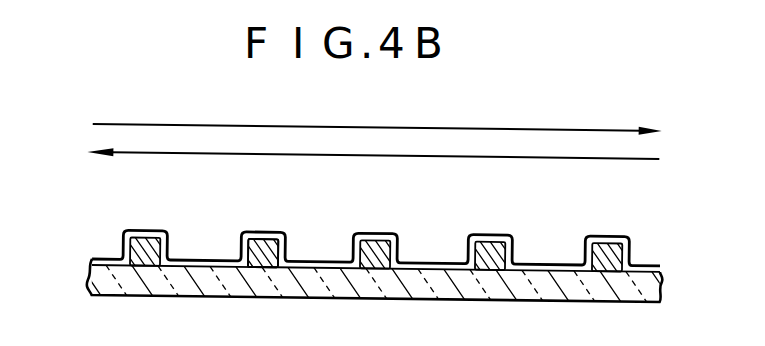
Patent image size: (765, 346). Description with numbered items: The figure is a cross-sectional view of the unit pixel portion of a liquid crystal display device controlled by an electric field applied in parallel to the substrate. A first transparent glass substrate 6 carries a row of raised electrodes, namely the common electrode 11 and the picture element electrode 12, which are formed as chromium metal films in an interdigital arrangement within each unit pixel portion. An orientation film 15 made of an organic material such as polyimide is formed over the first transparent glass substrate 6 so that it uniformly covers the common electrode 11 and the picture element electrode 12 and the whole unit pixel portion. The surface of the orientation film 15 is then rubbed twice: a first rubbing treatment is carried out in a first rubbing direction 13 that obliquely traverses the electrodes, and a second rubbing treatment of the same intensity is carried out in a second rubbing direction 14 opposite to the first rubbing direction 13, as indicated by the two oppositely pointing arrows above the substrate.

The first transparent glass substrate 6 is at (583, 279).
The common electrode 11 is at (155, 245).
The picture element electrode 12 is at (262, 240).
The first rubbing direction 13 is at (569, 153).
The second rubbing direction 14 is at (572, 123).
The orientation film 15 is at (617, 230).